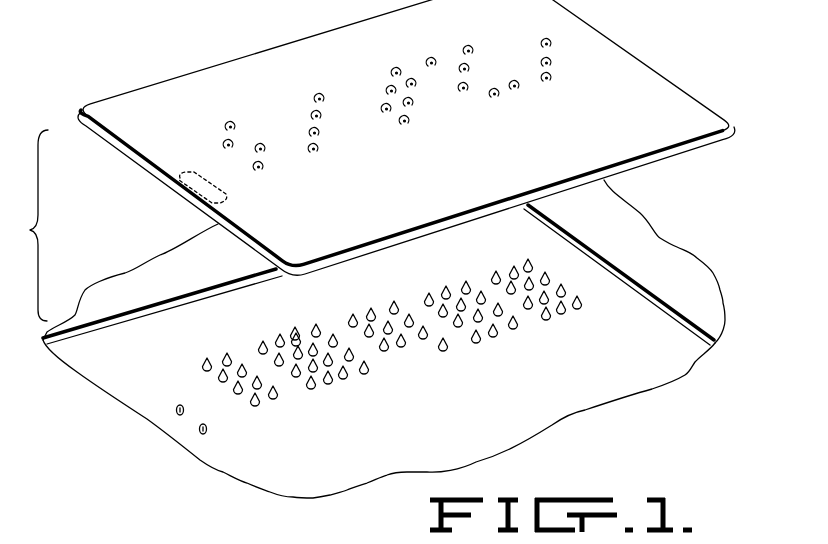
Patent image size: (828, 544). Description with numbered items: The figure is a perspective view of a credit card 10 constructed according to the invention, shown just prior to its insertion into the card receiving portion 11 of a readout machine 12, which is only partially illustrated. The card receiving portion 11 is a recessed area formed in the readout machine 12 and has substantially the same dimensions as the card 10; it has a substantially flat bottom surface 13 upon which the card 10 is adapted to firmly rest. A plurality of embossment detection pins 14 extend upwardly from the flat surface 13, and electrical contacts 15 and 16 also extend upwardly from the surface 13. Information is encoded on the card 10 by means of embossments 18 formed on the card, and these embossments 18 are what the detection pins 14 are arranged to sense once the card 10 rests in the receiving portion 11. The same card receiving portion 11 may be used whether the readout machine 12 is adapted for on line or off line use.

The card 10 is at (618, 46).
The card receiving portion 11 is at (632, 380).
The readout machine 12 is at (709, 305).
The flat bottom surface 13 is at (419, 432).
The embossment detection pins 14 is at (294, 329).
The electrical contact 15 is at (178, 407).
The electrical contact 16 is at (208, 432).
The embossments 18 is at (316, 96).